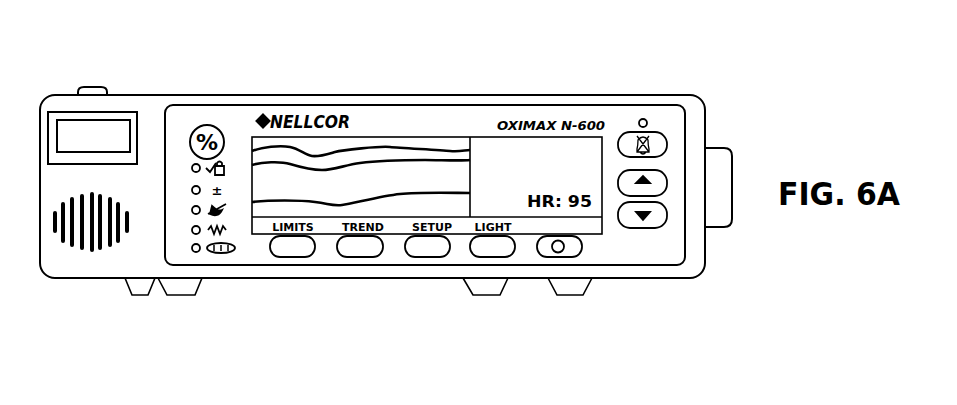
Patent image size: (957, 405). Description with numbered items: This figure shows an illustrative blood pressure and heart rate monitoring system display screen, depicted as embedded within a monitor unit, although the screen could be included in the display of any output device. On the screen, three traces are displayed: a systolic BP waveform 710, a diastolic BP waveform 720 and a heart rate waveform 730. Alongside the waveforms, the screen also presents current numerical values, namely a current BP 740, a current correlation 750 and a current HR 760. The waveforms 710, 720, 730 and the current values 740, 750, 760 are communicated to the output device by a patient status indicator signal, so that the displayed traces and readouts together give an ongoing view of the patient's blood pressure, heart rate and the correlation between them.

The systolic BP waveform 710 is at (308, 155).
The diastolic BP waveform 720 is at (397, 160).
The heart rate waveform 730 is at (307, 203).
The current BP 740 is at (508, 148).
The current correlation 750 is at (593, 167).
The current HR 760 is at (562, 250).